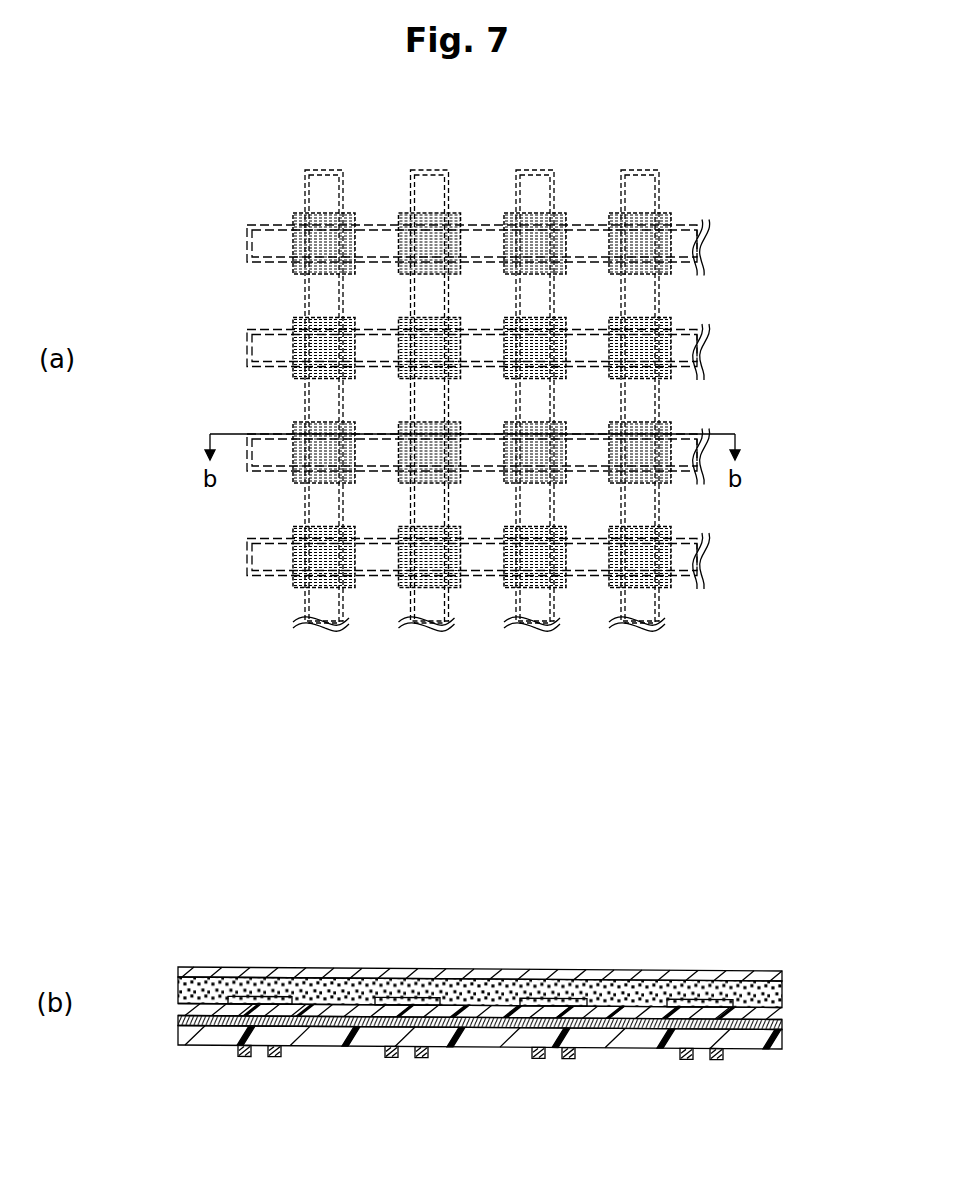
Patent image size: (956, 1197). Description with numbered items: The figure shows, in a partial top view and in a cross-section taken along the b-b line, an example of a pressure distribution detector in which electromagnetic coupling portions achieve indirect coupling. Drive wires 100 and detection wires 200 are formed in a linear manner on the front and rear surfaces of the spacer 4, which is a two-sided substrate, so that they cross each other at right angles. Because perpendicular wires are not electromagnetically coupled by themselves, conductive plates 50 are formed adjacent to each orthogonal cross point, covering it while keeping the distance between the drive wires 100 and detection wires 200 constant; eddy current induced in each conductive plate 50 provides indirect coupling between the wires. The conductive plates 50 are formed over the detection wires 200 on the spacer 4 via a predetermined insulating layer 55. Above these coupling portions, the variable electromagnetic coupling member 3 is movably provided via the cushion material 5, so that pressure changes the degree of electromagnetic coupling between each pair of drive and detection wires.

The variable electromagnetic coupling member 3 is at (507, 968).
The spacer 4 is at (785, 1030).
The cushion material 5 is at (772, 975).
The conductive plate 50 is at (349, 216).
The insulating layer 55 is at (783, 1005).
The drive wire 100 is at (305, 185).
The detection wire 200 is at (247, 248).